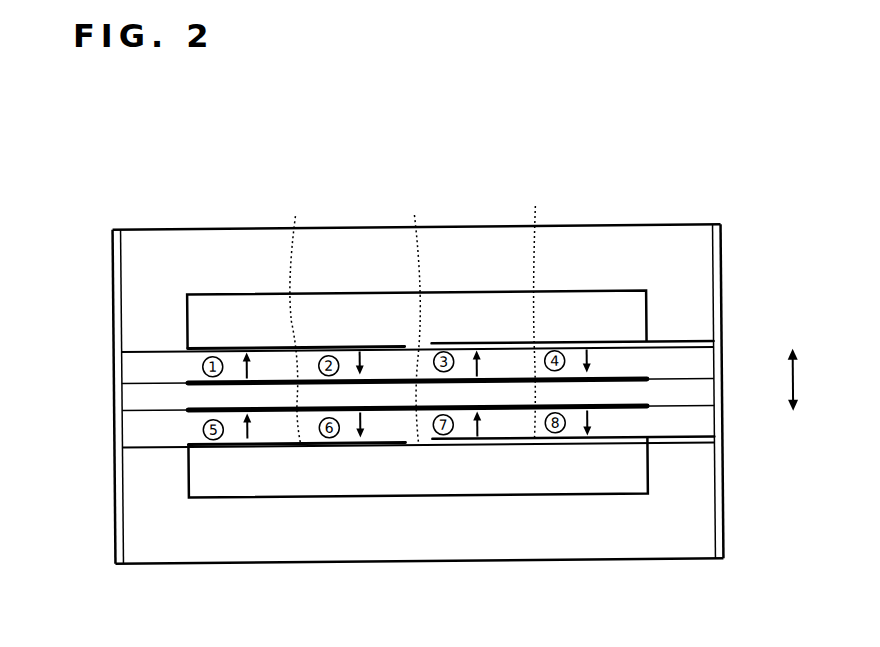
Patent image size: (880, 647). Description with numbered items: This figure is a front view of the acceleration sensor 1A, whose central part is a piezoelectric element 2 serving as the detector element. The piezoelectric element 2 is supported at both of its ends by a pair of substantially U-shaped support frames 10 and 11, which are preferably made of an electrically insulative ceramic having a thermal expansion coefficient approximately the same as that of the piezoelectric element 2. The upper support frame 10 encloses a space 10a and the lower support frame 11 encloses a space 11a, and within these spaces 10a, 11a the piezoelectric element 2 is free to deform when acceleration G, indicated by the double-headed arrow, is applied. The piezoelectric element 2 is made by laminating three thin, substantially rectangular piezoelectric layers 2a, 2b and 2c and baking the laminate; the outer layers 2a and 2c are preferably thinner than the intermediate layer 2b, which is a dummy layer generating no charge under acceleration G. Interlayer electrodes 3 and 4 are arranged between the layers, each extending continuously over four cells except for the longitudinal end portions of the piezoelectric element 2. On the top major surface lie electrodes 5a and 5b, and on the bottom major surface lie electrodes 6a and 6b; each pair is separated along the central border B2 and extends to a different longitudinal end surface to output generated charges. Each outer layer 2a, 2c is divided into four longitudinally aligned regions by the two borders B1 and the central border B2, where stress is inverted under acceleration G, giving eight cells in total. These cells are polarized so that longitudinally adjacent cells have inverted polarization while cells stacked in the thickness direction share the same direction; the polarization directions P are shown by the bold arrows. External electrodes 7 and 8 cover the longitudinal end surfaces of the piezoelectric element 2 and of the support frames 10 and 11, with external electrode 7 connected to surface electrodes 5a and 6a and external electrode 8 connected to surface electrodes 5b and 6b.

The acceleration sensor 1A is at (211, 197).
The piezoelectric element 2 is at (360, 399).
The outer piezoelectric layer 2a is at (135, 367).
The intermediate layer 2b is at (130, 398).
The outer piezoelectric layer 2c is at (377, 436).
The interlayer electrode 3 is at (268, 378).
The interlayer electrode 4 is at (288, 412).
The top major surface electrode 5a is at (165, 347).
The top major surface electrode 5b is at (618, 343).
The bottom major surface electrode 6a is at (173, 447).
The bottom major surface electrode 6b is at (617, 445).
The external electrode 7 is at (114, 254).
The external electrode 8 is at (723, 300).
The support frame 10 is at (358, 227).
The space 10a is at (482, 292).
The support frame 11 is at (399, 562).
The space 11a is at (508, 495).
The border B1 is at (423, 305).
The central border B2 is at (417, 310).
The polarization direction P is at (364, 352).
The acceleration G is at (807, 379).